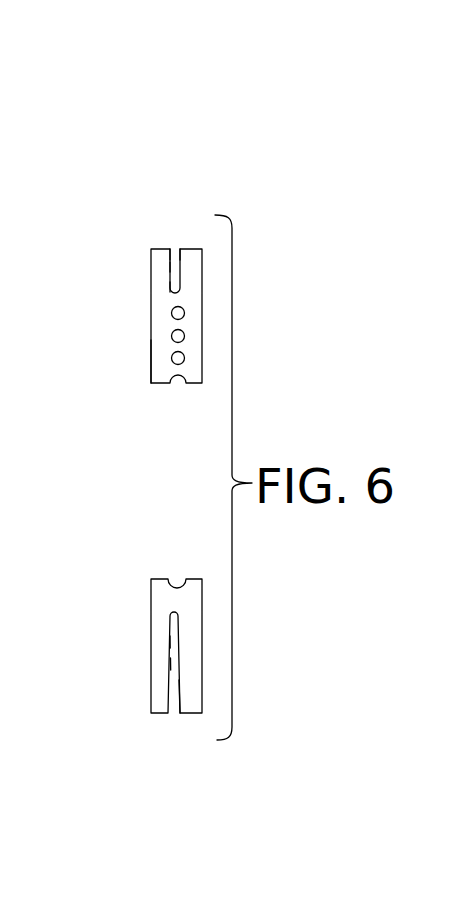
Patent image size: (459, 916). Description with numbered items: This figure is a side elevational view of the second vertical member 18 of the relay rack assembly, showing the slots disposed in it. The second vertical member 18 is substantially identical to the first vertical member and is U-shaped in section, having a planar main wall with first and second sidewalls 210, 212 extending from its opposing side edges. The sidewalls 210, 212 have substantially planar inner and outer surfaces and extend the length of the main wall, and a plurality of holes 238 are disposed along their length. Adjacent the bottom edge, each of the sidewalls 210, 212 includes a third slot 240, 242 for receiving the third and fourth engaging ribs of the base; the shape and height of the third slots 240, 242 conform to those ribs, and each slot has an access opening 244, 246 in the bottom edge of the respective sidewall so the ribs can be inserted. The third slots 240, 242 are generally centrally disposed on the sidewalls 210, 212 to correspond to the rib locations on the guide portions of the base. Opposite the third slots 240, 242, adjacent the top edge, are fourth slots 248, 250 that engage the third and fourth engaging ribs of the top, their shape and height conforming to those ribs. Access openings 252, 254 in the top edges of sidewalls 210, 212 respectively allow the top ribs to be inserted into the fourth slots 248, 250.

The second vertical member 18 is at (147, 97).
The first sidewall 210 is at (140, 320).
The second sidewall 212 is at (147, 357).
The holes 238 is at (182, 333).
The third slot 240 is at (168, 646).
The third slot 242 is at (169, 667).
The access opening 244 is at (175, 714).
The access opening 246 is at (177, 714).
The fourth slot 248 is at (168, 271).
The fourth slot 250 is at (169, 291).
The access opening 252 is at (172, 248).
The access opening 254 is at (176, 248).